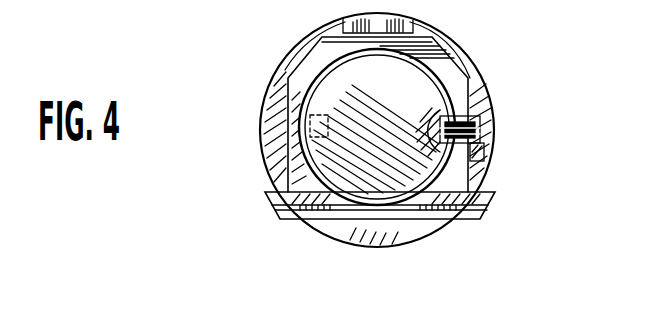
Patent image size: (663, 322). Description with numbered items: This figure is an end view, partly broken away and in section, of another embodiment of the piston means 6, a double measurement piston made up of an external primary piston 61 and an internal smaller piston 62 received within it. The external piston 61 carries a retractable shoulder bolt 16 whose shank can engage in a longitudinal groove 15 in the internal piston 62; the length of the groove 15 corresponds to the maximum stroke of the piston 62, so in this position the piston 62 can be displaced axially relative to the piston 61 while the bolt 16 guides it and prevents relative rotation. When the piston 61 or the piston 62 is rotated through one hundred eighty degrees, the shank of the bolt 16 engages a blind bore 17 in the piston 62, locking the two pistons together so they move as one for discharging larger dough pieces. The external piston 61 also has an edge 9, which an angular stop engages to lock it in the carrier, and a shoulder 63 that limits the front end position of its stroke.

The piston means 6 is at (474, 51).
The edge 9 is at (418, 16).
The longitudinal groove 15 is at (480, 150).
The retractable shoulder bolt 16 is at (490, 107).
The blind bore 17 is at (310, 128).
The external primary piston 61 is at (323, 68).
The internal smaller piston 62 is at (330, 163).
The shoulder 63 is at (473, 204).